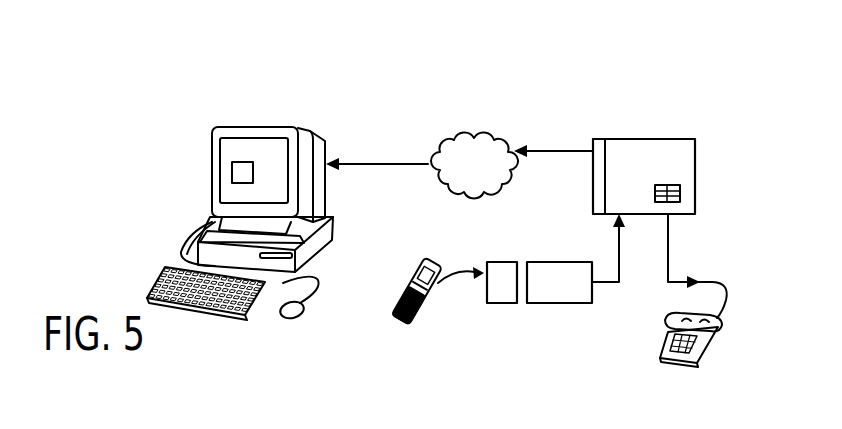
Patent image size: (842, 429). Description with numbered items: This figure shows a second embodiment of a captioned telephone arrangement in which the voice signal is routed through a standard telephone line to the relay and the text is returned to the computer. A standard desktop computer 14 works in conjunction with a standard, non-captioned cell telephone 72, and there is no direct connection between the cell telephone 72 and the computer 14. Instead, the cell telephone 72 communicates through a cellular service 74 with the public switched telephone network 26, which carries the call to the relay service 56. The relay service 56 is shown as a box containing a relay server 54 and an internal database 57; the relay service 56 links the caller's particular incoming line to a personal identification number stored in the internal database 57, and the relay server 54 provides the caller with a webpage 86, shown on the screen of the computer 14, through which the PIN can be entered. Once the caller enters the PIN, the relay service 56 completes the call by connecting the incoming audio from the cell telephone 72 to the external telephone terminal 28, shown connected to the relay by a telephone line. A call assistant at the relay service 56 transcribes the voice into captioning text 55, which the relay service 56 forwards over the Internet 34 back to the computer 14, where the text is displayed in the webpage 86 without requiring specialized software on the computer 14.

The computer 14 is at (208, 88).
The webpage 86 is at (232, 178).
The Internet 34 is at (481, 178).
The captioning text 55 is at (557, 154).
The relay service 56 is at (645, 139).
The relay server 54 is at (598, 139).
The internal database 57 is at (681, 193).
The cell telephone 72 is at (408, 280).
The cellular service 74 is at (502, 304).
The public switched telephone network 26 is at (553, 304).
The external telephone terminal 28 is at (667, 318).